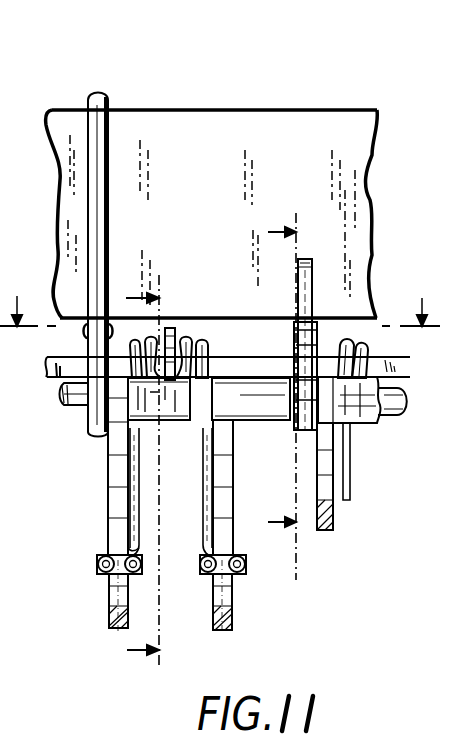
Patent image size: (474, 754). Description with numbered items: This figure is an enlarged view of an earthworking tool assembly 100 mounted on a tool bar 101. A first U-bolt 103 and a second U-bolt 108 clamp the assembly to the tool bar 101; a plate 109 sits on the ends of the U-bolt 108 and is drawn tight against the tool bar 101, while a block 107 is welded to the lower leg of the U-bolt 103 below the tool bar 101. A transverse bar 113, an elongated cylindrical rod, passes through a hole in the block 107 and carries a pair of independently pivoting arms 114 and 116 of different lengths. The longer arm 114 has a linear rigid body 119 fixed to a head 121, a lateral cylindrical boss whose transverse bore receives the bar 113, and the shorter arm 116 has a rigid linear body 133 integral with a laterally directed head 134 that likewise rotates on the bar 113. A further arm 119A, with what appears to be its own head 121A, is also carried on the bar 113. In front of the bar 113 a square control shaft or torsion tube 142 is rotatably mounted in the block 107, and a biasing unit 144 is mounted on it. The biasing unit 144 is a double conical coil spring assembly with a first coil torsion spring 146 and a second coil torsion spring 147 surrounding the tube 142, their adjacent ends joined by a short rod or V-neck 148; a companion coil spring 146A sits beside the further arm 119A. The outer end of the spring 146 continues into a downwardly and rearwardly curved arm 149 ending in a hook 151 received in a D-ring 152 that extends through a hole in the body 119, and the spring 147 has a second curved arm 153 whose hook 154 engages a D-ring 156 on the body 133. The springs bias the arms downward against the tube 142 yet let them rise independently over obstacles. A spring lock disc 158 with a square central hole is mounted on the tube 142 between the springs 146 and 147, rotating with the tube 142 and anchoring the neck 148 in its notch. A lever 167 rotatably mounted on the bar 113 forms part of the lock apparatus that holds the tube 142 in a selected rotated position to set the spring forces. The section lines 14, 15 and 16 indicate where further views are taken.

The apparatus 100 is at (218, 78).
The tool bar 101 is at (290, 138).
The first U-bolt 103 is at (95, 100).
The block 107 is at (95, 432).
The second U-bolt 108 is at (11, 166).
The plate 109 is at (11, 81).
The transverse bar 113 is at (404, 402).
The arm 114 is at (97, 515).
The arm 116 is at (253, 598).
The body 119 is at (115, 477).
The arm 119A is at (333, 510).
The head 121 is at (163, 403).
The hub 121A is at (352, 422).
The body 133 is at (231, 468).
The head 134 is at (263, 403).
The torsion tube 142 is at (395, 368).
The biasing unit 144 is at (186, 318).
The first coil torsion spring 146 is at (150, 338).
The clip fingers 146A is at (356, 338).
The second coil torsion spring 147 is at (200, 342).
The V-neck 148 is at (167, 405).
The spring arm 149 is at (137, 513).
The pin 151 is at (108, 583).
The D-ring 152 is at (97, 563).
The spring arm 153 is at (204, 516).
The hook 154 is at (211, 583).
The D-ring 156 is at (242, 562).
The spring lock 158 is at (169, 328).
The lever 167 is at (312, 258).
The tractor wheel 14 is at (220, 300).
The section line 15- 15 is at (139, 474).
The tractor wheel 16 is at (270, 396).